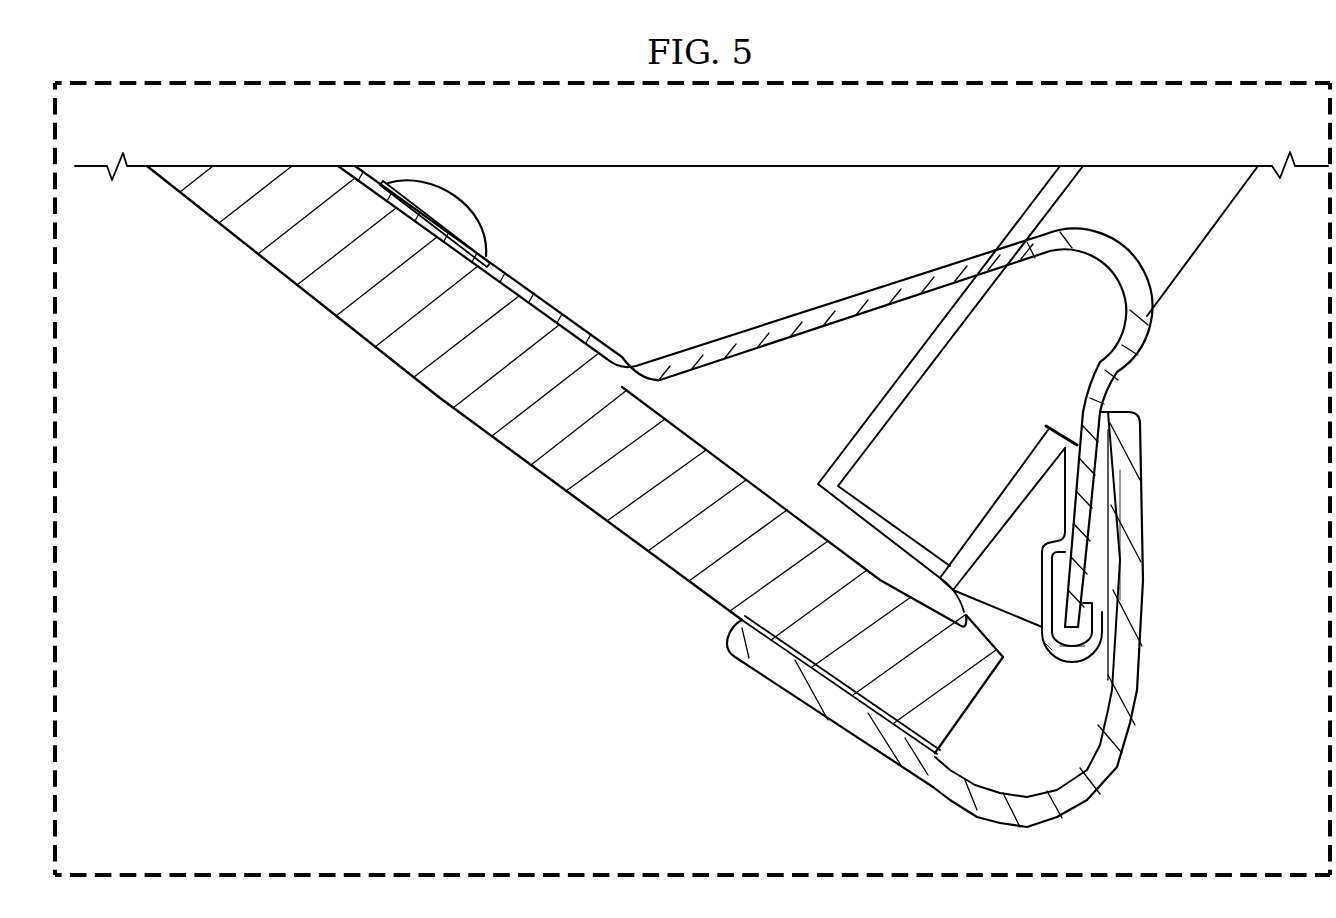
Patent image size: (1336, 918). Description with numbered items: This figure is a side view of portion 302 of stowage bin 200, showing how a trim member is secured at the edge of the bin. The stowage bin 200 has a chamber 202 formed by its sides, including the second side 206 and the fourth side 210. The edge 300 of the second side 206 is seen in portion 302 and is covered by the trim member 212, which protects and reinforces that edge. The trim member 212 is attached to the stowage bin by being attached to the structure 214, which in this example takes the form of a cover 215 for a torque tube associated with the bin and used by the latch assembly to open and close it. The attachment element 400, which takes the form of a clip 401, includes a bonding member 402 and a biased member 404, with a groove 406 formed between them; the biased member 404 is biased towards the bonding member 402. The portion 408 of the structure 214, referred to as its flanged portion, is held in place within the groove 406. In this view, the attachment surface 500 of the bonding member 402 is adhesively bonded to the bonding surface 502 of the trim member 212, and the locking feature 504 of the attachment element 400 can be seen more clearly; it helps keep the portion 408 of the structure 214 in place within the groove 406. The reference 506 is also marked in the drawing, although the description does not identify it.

The stowage bin 200 is at (548, 638).
The chamber 202 is at (526, 180).
The second side 206 is at (500, 455).
The fourth side 210 is at (928, 187).
The trim member 212 is at (1086, 826).
The structure 214 is at (733, 336).
The cover 215 is at (877, 290).
The edge 300 is at (962, 735).
The portion 302 is at (552, 78).
The attachment element 400 is at (1008, 592).
The clip 401 is at (1036, 660).
The bonding member 402 is at (1126, 502).
The biased member 404 is at (1062, 452).
The groove 406 is at (1066, 648).
The portion 408 is at (1078, 492).
The attachment surface 500 is at (1120, 514).
The bonding surface 502 is at (1085, 522).
The locking feature 504 is at (1043, 585).
The U bottom 506 is at (1112, 652).